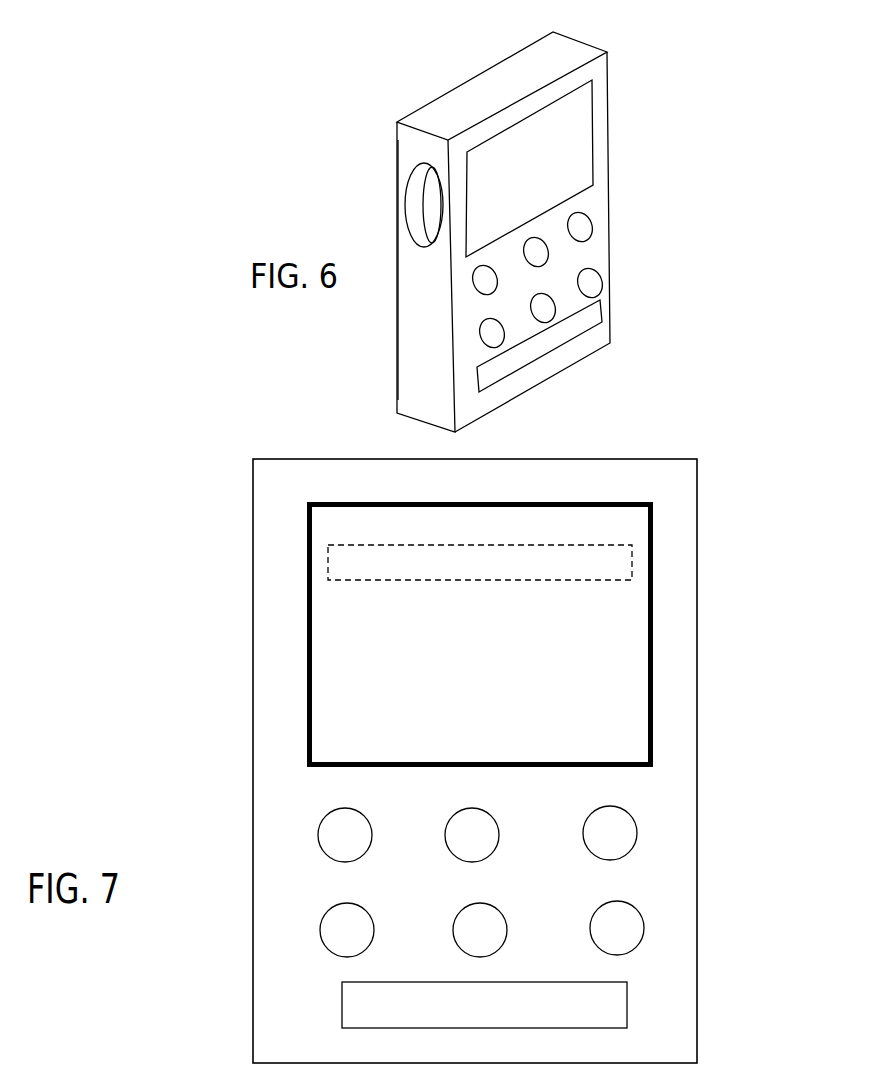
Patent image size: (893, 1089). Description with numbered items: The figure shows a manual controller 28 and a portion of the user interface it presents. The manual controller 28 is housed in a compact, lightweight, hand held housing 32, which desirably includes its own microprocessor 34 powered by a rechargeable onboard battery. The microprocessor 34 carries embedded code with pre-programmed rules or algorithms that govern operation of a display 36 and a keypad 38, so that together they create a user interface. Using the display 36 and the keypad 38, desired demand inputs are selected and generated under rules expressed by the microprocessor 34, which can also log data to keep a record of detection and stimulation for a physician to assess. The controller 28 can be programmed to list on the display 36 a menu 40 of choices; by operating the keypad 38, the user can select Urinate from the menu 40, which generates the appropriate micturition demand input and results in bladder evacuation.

In FIG. 6, the manual controller 28 is at (538, 226).
In FIG. 7, the manual controller 28 is at (539, 730).
In FIG. 6, the hand held housing 32 is at (371, 270).
In FIG. 6, the microprocessor 34 is at (381, 195).
In FIG. 6, the display 36 is at (579, 168).
In FIG. 7, the display 36 is at (574, 619).
In FIG. 6, the keypad 38 is at (574, 300).
In FIG. 7, the keypad 38 is at (575, 917).
In FIG. 7, the menu 40 is at (376, 711).